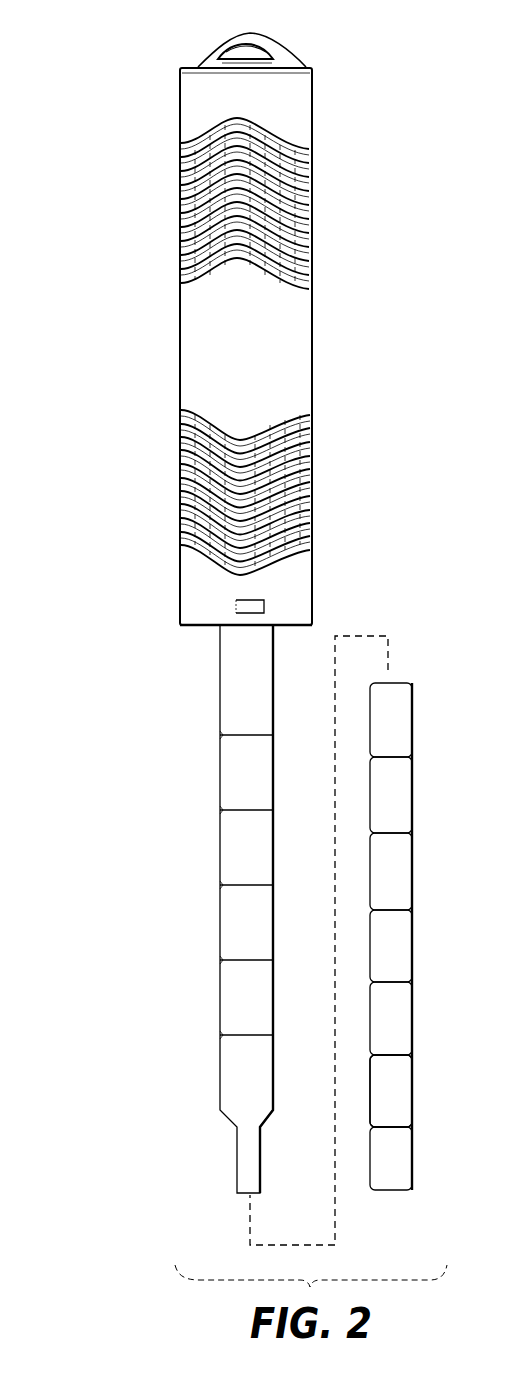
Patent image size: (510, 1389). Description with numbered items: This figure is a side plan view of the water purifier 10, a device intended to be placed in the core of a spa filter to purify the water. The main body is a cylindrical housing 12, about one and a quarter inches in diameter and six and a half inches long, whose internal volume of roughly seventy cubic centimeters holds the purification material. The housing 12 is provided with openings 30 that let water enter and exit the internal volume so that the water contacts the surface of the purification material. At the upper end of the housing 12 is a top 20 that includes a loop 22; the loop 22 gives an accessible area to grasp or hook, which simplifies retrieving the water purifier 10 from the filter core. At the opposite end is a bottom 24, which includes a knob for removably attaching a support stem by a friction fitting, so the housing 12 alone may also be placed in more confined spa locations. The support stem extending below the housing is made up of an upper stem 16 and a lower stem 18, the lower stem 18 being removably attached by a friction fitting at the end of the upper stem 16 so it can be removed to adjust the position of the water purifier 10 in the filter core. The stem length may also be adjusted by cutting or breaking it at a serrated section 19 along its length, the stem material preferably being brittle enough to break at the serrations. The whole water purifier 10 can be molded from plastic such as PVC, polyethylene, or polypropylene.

The water purifier 10 is at (88, 382).
The housing 12 is at (179, 312).
The upper stem 16 is at (218, 845).
The lower stem 18 is at (413, 957).
The serrated section 19 is at (413, 1054).
The top 20 is at (193, 62).
The loop 22 is at (283, 42).
The bottom 24 is at (200, 630).
The openings 30 is at (312, 441).